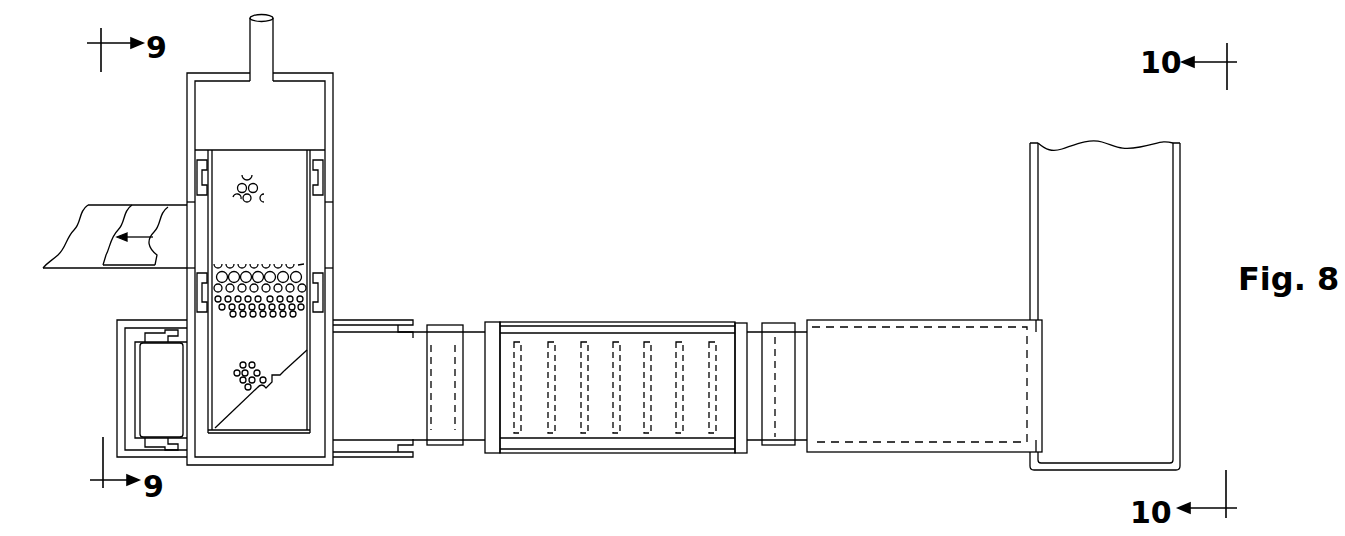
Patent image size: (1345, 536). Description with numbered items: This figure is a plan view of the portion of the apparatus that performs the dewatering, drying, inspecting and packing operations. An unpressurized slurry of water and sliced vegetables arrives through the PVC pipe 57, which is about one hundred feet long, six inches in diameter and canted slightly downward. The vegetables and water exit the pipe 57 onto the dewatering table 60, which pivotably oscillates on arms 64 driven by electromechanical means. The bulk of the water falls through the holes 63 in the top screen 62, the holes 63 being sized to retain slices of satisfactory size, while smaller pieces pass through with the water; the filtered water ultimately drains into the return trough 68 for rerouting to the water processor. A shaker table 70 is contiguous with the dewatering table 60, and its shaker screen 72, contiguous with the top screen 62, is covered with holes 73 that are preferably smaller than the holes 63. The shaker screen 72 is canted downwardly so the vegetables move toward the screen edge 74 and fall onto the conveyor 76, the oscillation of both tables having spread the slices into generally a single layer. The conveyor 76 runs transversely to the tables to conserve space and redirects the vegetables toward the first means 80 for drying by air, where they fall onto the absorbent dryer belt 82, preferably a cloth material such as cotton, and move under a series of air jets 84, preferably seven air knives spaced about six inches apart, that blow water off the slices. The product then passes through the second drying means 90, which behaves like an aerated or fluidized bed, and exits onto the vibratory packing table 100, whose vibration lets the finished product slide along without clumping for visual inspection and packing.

The PVC pipe 57 is at (272, 47).
The dewatering table 60 is at (350, 184).
The top screen 62 is at (292, 272).
The holes 63 is at (255, 187).
The arms 64 is at (323, 295).
The return trough 68 is at (118, 205).
The shaker table 70 is at (279, 392).
The shaker screen 72 is at (277, 346).
The holes 73 is at (296, 310).
The screen edge 74 is at (233, 413).
The conveyor 76 is at (295, 412).
The first means for drying 80 is at (538, 459).
The absorbent dryer belt 82 is at (753, 335).
The air jets 84 is at (525, 350).
The second drying means 90 is at (894, 456).
The vibratory packing table 100 is at (1186, 351).